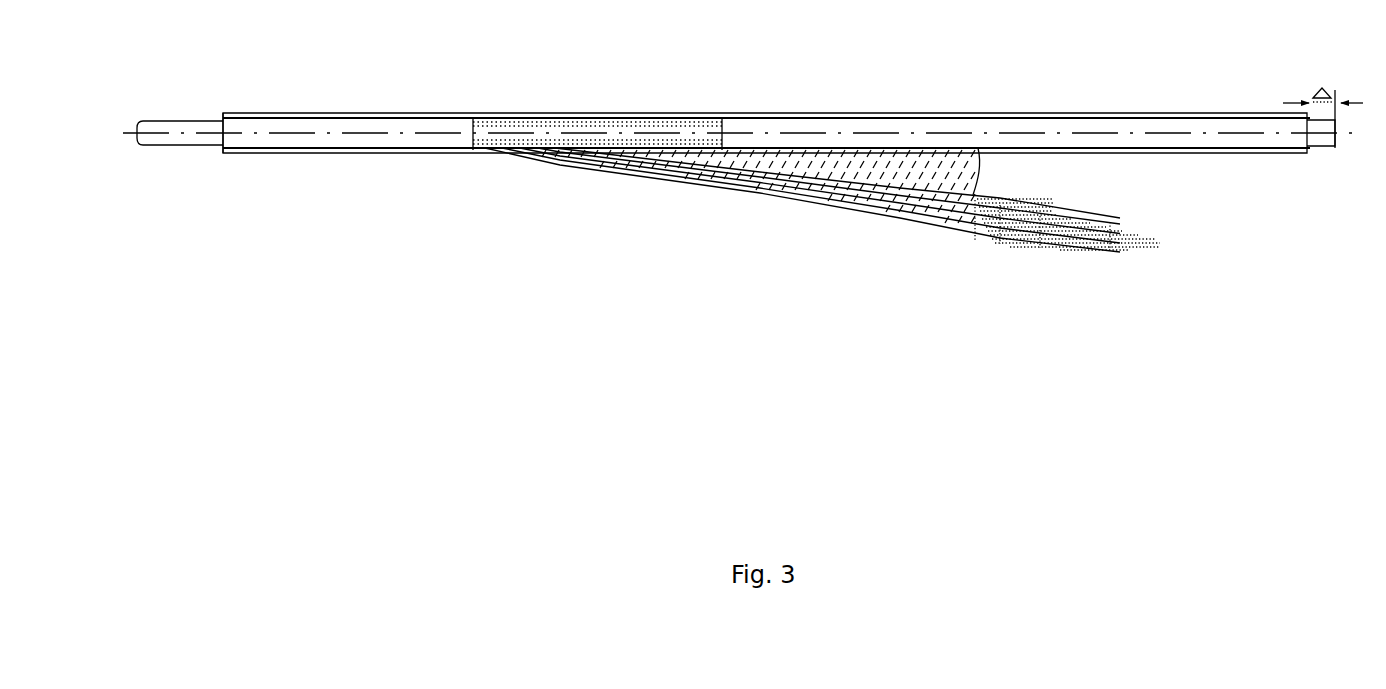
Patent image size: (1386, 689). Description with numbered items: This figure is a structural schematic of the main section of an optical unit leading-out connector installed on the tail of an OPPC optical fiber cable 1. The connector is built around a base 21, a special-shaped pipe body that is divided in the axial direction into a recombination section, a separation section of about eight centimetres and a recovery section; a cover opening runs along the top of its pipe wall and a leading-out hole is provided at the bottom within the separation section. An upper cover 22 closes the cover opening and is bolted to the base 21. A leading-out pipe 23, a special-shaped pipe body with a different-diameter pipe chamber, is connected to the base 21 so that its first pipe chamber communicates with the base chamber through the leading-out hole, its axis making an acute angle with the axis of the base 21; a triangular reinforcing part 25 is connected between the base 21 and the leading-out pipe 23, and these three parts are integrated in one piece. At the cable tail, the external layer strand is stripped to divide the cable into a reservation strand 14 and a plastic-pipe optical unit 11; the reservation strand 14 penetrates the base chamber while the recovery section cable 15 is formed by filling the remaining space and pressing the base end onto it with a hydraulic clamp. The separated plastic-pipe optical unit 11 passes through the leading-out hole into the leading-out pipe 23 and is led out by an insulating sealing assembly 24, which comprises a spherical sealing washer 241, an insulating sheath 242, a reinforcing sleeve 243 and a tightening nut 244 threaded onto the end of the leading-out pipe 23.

The OPPC optical fiber cable 1 is at (180, 143).
The plastic-pipe optical unit 11 is at (637, 158).
The reservation strand 14 is at (545, 141).
The recovery section cable 15 is at (1318, 149).
The base 21 is at (292, 155).
The upper cover 22 is at (224, 113).
The leading-out pipe 23 is at (680, 179).
The insulating sealing assembly 24 is at (1047, 285).
The triangular reinforcing part 25 is at (885, 173).
The spherical sealing washer 241 is at (971, 231).
The insulating sheath 242 is at (1007, 236).
The reinforcing sleeve 243 is at (1134, 281).
The tightening nut 244 is at (1038, 249).